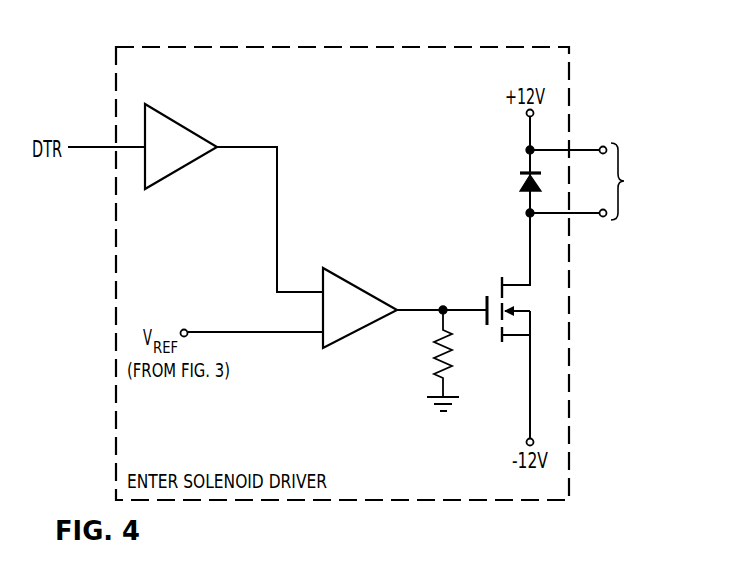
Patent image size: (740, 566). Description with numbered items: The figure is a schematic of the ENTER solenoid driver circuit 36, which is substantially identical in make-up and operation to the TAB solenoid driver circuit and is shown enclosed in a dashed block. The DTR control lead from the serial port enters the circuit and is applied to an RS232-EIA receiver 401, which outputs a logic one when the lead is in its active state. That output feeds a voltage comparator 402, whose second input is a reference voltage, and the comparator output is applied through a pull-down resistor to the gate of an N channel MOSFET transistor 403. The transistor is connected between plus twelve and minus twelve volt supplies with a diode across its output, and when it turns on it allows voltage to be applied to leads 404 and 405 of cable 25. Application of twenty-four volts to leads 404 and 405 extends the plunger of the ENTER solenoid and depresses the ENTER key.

The ENTER solenoid driver circuit 36 is at (508, 47).
The RS232-EIA receiver 401 is at (190, 128).
The quad voltage comparator 402 is at (352, 280).
The N channel MOSFET transistor 403 is at (493, 287).
The lead 404 is at (606, 146).
The lead 405 is at (606, 217).
The cable 25 is at (624, 181).